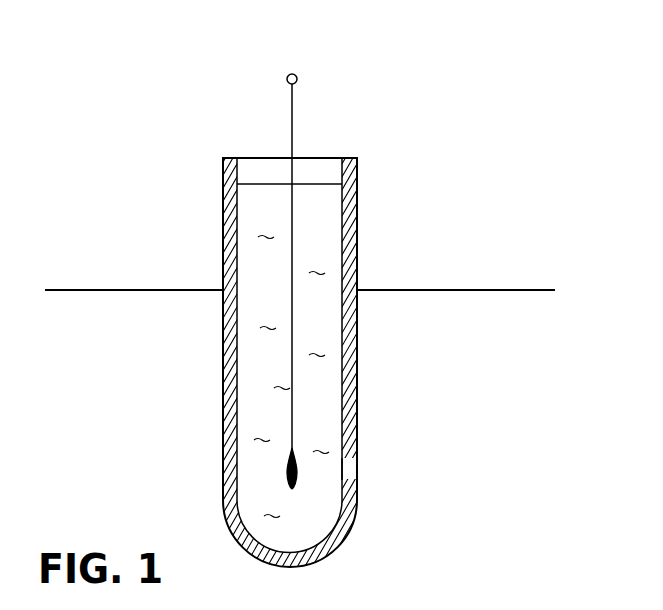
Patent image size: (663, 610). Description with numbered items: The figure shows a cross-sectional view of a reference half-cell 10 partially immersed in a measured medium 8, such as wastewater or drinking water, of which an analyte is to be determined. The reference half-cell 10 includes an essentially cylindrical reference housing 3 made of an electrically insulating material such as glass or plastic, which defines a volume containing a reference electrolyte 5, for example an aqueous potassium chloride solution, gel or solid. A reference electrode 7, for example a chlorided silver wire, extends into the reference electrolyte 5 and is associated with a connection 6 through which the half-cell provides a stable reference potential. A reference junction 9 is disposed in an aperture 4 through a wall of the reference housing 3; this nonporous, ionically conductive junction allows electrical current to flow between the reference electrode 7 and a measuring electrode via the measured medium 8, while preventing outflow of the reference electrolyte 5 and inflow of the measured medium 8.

The reference housing 3 is at (232, 461).
The aperture 4 is at (342, 458).
The reference electrolyte 5 is at (318, 246).
The connection 6 is at (298, 76).
The reference electrode 7 is at (292, 385).
The measured medium 8 is at (527, 357).
The reference junction 9 is at (353, 477).
The reference half-cell 10 is at (497, 132).